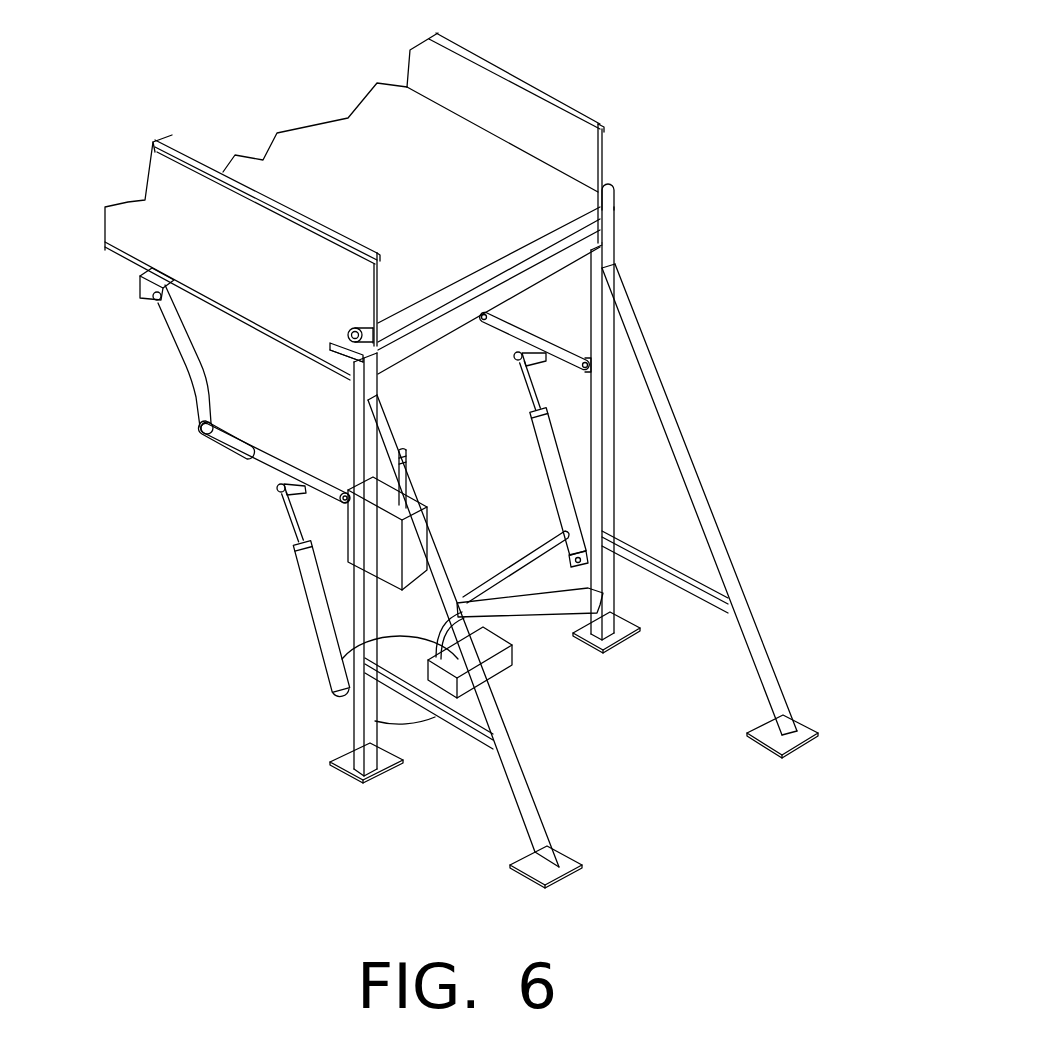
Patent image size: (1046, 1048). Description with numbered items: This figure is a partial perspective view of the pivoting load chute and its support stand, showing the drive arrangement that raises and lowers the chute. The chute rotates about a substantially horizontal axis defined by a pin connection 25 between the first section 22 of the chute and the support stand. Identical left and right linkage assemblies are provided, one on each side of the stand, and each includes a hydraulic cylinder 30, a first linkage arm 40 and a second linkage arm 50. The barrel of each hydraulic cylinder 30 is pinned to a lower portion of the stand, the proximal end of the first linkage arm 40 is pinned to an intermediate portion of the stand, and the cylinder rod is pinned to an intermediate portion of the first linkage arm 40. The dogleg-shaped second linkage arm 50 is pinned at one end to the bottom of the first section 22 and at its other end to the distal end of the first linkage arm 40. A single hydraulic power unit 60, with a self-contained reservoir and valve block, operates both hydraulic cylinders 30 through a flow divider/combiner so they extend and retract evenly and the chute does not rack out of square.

The first section 22 is at (522, 82).
The pin connection 25 is at (349, 333).
The hydraulic cylinder 30 is at (313, 603).
The first linkage arm 40 is at (273, 463).
The second linkage arm 50 is at (190, 365).
The hydraulic power unit 60 is at (505, 655).